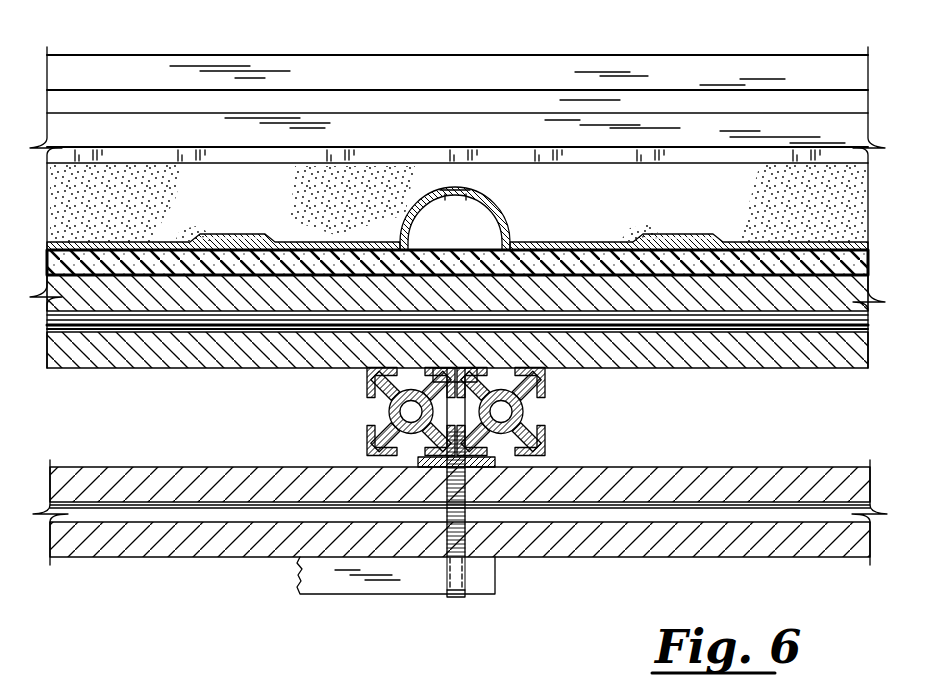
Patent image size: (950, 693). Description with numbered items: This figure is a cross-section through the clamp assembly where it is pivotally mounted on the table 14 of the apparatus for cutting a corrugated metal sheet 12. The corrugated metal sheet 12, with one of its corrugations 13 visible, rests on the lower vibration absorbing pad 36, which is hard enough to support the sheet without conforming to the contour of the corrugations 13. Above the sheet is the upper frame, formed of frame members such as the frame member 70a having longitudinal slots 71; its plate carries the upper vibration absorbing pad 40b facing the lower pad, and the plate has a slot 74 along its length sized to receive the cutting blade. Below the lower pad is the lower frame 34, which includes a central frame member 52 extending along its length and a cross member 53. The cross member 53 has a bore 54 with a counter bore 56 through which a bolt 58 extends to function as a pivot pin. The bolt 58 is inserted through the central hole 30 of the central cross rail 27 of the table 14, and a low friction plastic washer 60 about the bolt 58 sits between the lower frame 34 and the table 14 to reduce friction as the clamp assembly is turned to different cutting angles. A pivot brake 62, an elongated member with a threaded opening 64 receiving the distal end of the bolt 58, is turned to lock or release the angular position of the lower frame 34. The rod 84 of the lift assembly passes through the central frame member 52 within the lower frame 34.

The corrugated metal sheet 12 is at (47, 244).
The corrugations 13 is at (483, 196).
The table 14 is at (870, 537).
The central cross rail 27 is at (73, 558).
The central hole 30 is at (462, 484).
The lower frame 34 is at (479, 379).
The lower vibration absorbing pad 36 is at (863, 262).
The upper vibration absorbing pad 40b is at (663, 199).
The central frame member 52 is at (157, 348).
The cross member 53 is at (548, 380).
The bore 54 is at (400, 413).
The counter bore 56 is at (450, 369).
The bolt 58 is at (467, 597).
The washer 60 is at (415, 462).
The pivot brake 62 is at (352, 595).
The threaded opening 64 is at (453, 572).
The frame member 70a is at (553, 55).
The longitudinal slots 71 is at (703, 103).
The slot 74 is at (500, 155).
The rod 84 is at (62, 321).